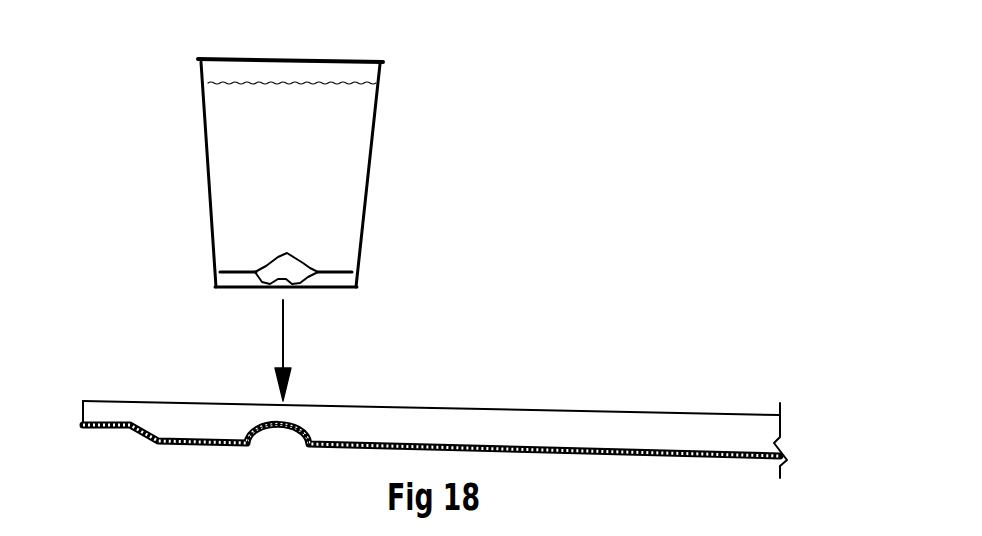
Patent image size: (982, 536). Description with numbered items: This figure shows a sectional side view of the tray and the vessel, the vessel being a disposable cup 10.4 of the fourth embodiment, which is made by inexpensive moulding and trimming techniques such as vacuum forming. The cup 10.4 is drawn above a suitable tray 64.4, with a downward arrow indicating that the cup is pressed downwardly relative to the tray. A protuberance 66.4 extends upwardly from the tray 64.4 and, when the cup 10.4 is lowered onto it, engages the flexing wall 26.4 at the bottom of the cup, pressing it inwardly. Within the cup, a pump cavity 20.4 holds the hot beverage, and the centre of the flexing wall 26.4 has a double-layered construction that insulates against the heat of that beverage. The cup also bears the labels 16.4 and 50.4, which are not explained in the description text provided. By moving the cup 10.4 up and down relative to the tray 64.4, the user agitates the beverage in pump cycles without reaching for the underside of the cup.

The disposable cup 10.4 is at (159, 158).
The liquid 16.4 is at (316, 167).
The pump cavity 20.4 is at (303, 263).
The flexing wall 26.4 is at (310, 284).
The container 50.4 is at (355, 132).
The tray 64.4 is at (468, 421).
The protuberance 66.4 is at (262, 424).